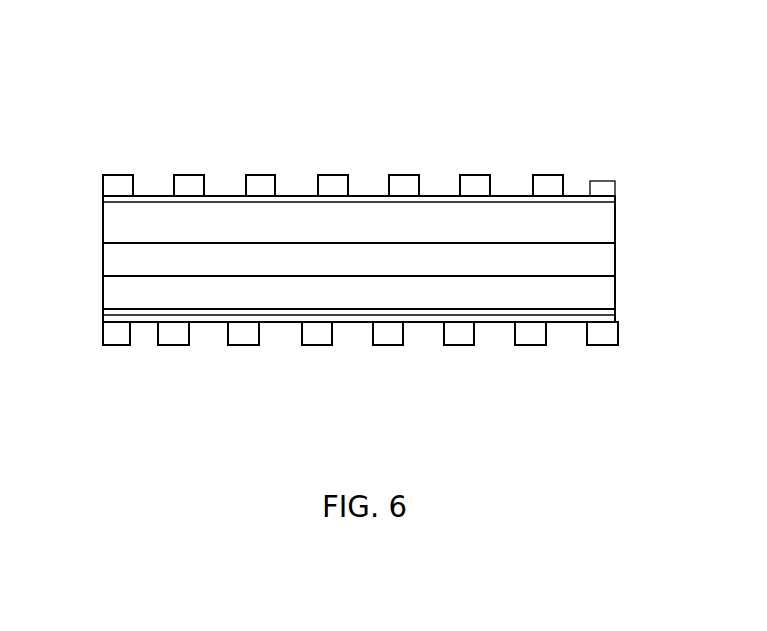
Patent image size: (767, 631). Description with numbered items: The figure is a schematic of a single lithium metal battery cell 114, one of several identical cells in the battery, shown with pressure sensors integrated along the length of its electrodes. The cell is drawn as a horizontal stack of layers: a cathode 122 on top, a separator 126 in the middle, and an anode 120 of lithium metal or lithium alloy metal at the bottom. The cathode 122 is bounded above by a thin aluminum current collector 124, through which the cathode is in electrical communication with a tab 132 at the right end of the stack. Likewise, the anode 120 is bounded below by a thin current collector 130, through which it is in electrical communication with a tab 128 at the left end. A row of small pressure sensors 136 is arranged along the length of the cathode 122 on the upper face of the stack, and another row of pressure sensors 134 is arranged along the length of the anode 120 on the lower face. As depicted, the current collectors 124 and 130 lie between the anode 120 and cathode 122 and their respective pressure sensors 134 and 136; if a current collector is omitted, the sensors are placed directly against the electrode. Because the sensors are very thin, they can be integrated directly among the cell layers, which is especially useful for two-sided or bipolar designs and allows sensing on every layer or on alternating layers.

The lithium metal battery cell 114 is at (478, 82).
The anode 120 is at (615, 303).
The cathode 122 is at (615, 220).
The aluminum current collector 124 is at (103, 203).
The separator 126 is at (615, 268).
The tab 128 is at (103, 332).
The current collector 130 is at (107, 316).
The tab 132 is at (615, 186).
The pressure sensors 134 is at (230, 345).
The pressure sensors 136 is at (490, 175).